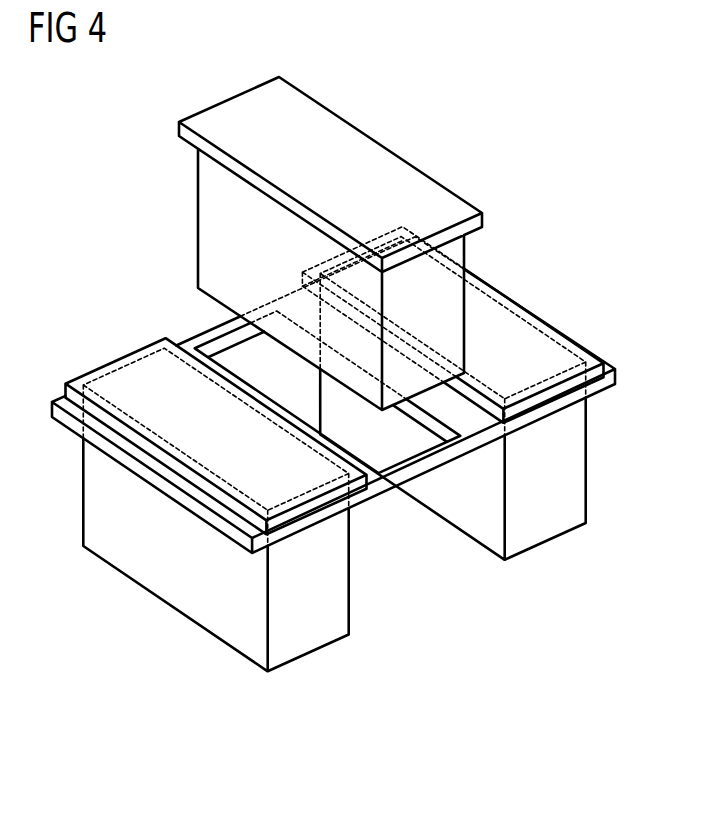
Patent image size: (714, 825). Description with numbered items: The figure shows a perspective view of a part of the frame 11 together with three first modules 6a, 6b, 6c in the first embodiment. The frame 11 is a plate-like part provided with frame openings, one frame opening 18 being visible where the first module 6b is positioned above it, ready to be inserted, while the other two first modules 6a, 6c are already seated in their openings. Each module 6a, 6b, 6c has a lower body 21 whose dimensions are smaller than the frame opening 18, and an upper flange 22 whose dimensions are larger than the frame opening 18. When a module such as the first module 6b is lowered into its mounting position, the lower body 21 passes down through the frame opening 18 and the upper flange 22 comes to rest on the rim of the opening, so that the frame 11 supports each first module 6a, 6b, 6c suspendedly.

The frame 11 is at (225, 532).
The frame opening 18 is at (230, 353).
The lower body 21 is at (452, 333).
The upper flange 22 is at (235, 117).
The first module 6a is at (143, 572).
The first module 6b is at (208, 196).
The first module 6c is at (473, 523).